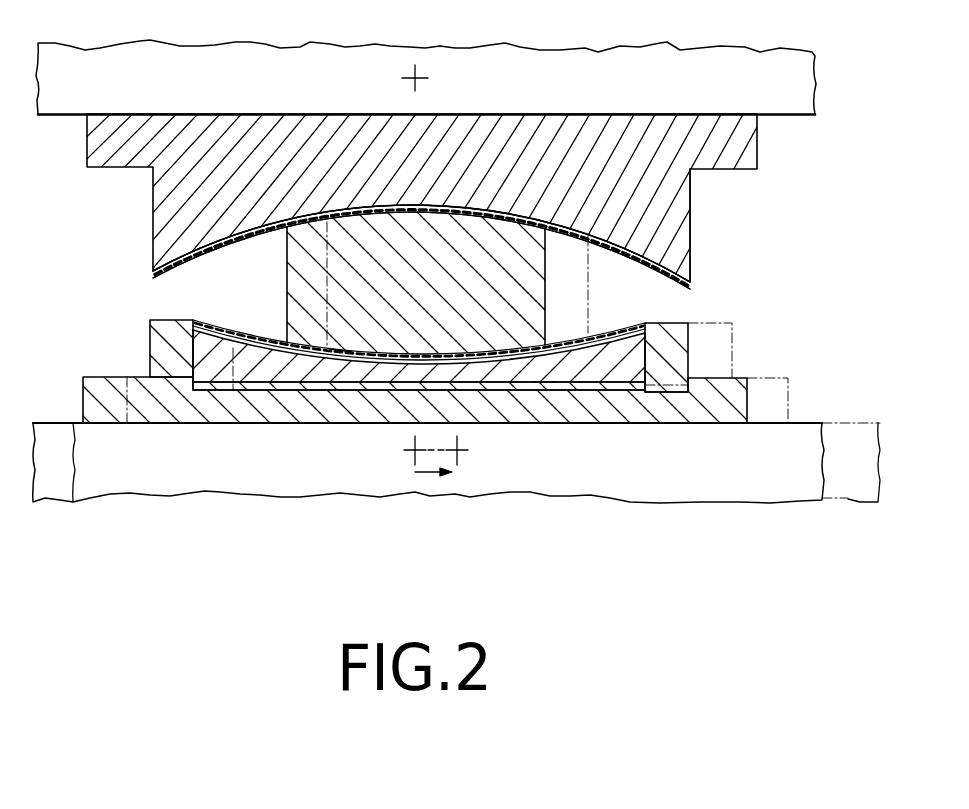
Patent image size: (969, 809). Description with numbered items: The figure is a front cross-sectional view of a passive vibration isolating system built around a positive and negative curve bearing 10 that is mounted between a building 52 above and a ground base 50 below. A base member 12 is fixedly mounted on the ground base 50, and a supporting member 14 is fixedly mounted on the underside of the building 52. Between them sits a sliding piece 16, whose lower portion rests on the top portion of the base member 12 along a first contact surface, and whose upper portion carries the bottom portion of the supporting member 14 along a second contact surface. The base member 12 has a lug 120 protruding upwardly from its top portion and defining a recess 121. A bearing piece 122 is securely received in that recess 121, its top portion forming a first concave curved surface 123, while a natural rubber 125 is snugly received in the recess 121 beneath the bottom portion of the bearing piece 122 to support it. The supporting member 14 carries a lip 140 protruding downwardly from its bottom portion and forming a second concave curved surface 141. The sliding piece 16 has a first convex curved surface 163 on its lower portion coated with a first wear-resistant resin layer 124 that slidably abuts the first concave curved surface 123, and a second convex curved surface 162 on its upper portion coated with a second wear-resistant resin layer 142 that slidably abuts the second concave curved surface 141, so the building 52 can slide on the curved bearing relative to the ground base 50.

The positive and negative curve bearing 10 is at (745, 308).
The base member 12 is at (748, 407).
The supporting member 14 is at (745, 150).
The sliding piece 16 is at (305, 280).
The ground base 50 is at (772, 482).
The building 52 is at (797, 85).
The lug 120 is at (688, 337).
The recess 121 is at (648, 350).
The bearing piece 122 is at (492, 368).
The first concave curved surface 123 is at (228, 326).
The first wear-resistant resin layer 124 is at (340, 348).
The natural rubber 125 is at (545, 383).
The lip 140 is at (673, 202).
The second concave curved surface 141 is at (583, 238).
The second wear-resistant resin layer 142 is at (633, 243).
The second convex curved surface 162 is at (405, 207).
The first convex curved surface 163 is at (540, 345).